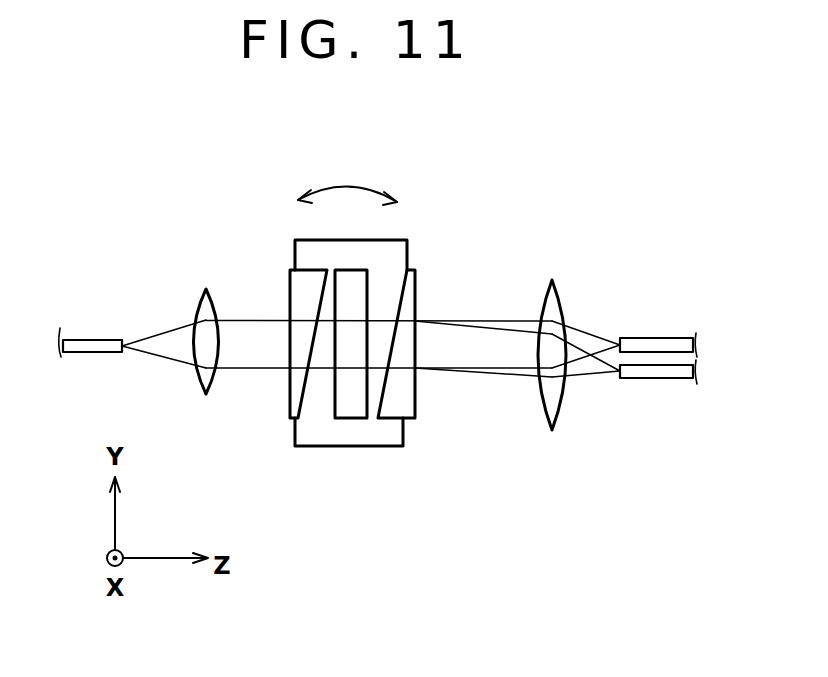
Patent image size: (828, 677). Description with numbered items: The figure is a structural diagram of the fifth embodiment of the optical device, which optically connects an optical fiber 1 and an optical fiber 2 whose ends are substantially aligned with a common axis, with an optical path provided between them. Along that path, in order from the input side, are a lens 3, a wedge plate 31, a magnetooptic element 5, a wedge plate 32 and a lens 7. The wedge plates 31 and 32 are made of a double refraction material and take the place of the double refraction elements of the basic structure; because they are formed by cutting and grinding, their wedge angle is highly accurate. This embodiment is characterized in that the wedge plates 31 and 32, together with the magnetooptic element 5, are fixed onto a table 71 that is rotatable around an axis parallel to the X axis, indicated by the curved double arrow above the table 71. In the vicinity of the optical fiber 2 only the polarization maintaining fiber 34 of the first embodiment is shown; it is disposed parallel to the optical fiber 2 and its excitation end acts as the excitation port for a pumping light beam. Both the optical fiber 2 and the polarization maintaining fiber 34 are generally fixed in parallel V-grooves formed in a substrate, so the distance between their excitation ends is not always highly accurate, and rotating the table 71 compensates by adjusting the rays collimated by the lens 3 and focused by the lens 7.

The optical fiber 1 is at (88, 340).
The optical fiber 2 is at (658, 338).
The polarization maintaining fiber 34 is at (658, 378).
The lens 3 is at (212, 392).
The lens 7 is at (558, 300).
The magnetooptic element 5 is at (348, 418).
The wedge plate 31 is at (290, 418).
The wedge plate 32 is at (393, 420).
The table 71 is at (395, 240).